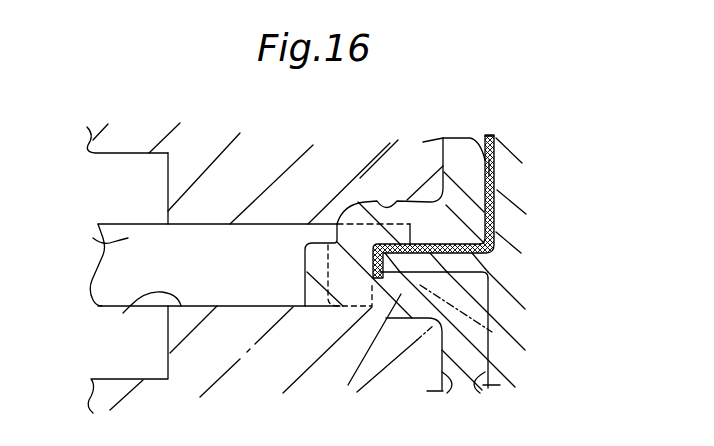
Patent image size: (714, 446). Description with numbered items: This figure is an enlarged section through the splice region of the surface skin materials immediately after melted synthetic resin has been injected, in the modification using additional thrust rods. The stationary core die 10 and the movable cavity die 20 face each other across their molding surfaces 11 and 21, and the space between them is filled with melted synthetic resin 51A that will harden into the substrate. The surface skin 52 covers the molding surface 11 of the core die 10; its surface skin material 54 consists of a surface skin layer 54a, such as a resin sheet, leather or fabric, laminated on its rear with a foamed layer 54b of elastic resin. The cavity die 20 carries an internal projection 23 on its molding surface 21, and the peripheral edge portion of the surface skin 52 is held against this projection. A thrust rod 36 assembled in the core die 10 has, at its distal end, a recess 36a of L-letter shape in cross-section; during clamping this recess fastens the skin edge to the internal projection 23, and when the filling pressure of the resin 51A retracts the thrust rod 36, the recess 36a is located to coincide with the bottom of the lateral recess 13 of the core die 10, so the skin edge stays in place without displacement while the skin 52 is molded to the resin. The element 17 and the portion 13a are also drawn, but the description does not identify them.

The core die 10 is at (246, 157).
The housing wall portion 17 is at (119, 158).
The thrust rods 36 is at (94, 238).
The recess of L-letter shape 36a is at (304, 266).
The projection 13a is at (131, 309).
The lateral recess 13 is at (374, 200).
The surface skin material 54 is at (506, 203).
The surface skin layer 54a is at (506, 169).
The foamed layer 54b is at (474, 138).
The surface skin 52 is at (493, 121).
The internal projection 23 is at (513, 264).
The cavity die 20 is at (512, 333).
The melted synthetic resin 51A is at (368, 366).
The molding surface 11 is at (453, 393).
The molding surface 21 is at (470, 397).